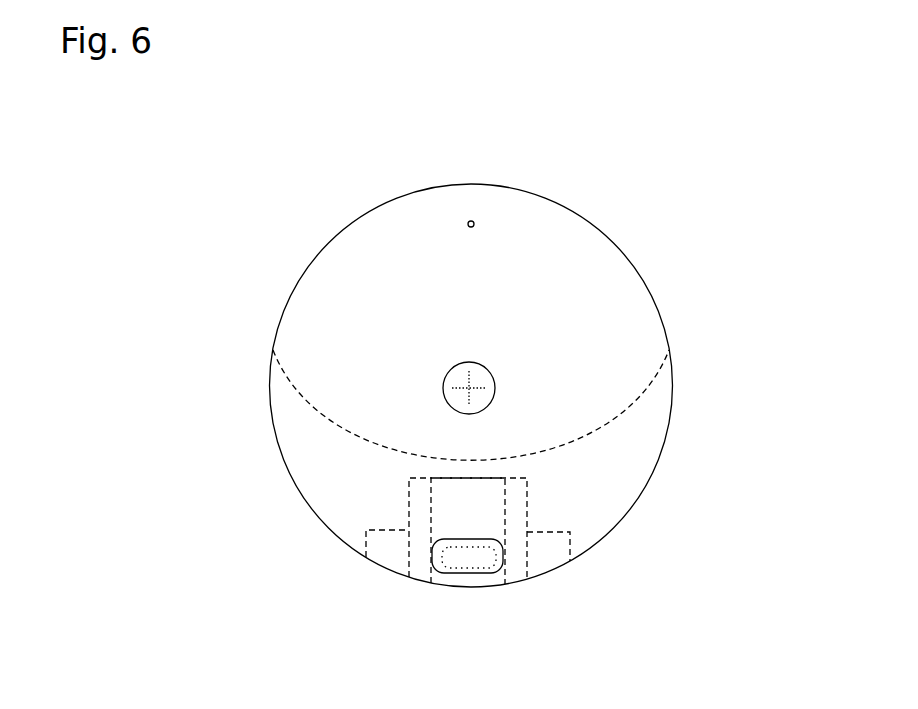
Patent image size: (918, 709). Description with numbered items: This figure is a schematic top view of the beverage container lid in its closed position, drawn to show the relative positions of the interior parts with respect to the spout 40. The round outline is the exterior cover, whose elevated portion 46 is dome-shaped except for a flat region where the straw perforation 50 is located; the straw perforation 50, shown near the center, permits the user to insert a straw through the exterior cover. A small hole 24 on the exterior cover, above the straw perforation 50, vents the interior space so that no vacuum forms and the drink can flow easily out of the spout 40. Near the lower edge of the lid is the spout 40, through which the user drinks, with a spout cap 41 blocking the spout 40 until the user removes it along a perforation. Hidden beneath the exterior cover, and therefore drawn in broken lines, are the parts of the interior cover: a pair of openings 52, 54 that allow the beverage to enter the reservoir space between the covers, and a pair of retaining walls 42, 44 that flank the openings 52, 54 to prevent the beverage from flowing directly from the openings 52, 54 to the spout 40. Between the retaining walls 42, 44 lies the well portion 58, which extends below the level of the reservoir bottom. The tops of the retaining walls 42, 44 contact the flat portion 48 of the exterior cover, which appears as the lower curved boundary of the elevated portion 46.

The small hole 24 is at (474, 222).
The spout 40 is at (452, 575).
The spout cap 41 is at (468, 560).
The retaining wall 42 is at (517, 502).
The retaining wall 44 is at (420, 506).
The elevated portion 46 is at (588, 290).
The flat portion 48 is at (623, 479).
The straw perforation 50 is at (465, 387).
The opening 52 is at (545, 553).
The opening 54 is at (387, 552).
The well portion 58 is at (465, 500).